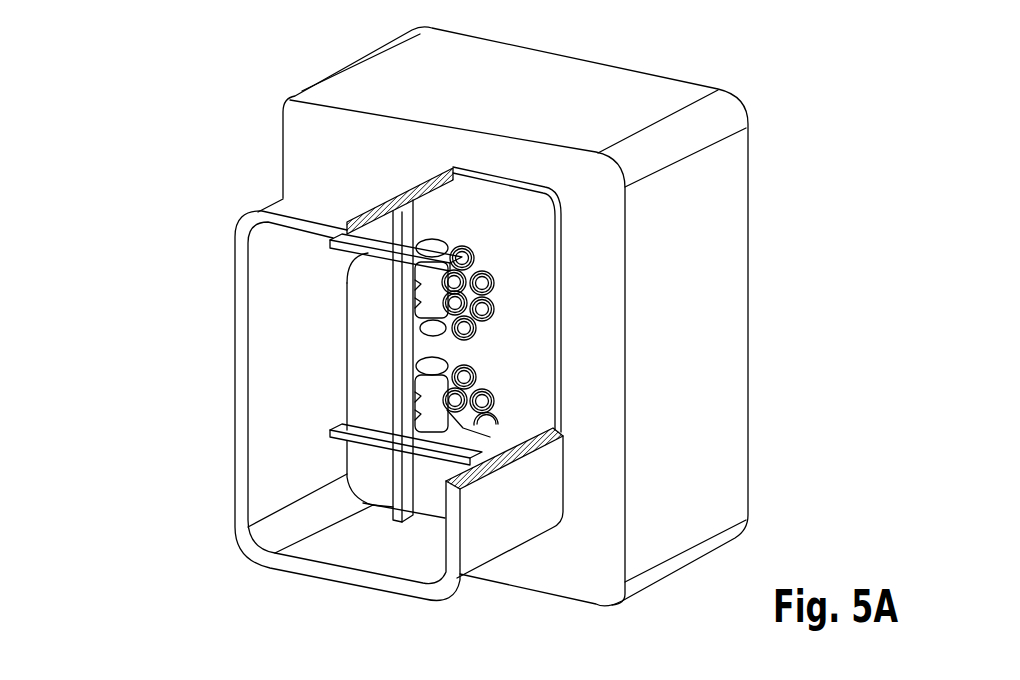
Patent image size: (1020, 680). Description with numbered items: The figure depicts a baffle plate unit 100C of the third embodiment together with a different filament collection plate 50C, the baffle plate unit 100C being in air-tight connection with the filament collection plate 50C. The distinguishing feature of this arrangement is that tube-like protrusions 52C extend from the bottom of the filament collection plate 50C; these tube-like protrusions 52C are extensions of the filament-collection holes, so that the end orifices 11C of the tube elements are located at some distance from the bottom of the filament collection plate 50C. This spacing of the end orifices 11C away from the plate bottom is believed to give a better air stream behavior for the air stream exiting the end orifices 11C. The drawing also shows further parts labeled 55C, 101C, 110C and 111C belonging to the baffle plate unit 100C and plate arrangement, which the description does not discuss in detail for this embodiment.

The filament collection plate 50C is at (683, 466).
The tube-like protrusions 52C is at (448, 248).
The seal 55C is at (487, 175).
The end orifices 11C is at (495, 283).
The baffle plate unit 100C is at (205, 380).
The connector module 101C is at (415, 324).
The frame 110C is at (310, 570).
The guide rib 111C is at (393, 300).